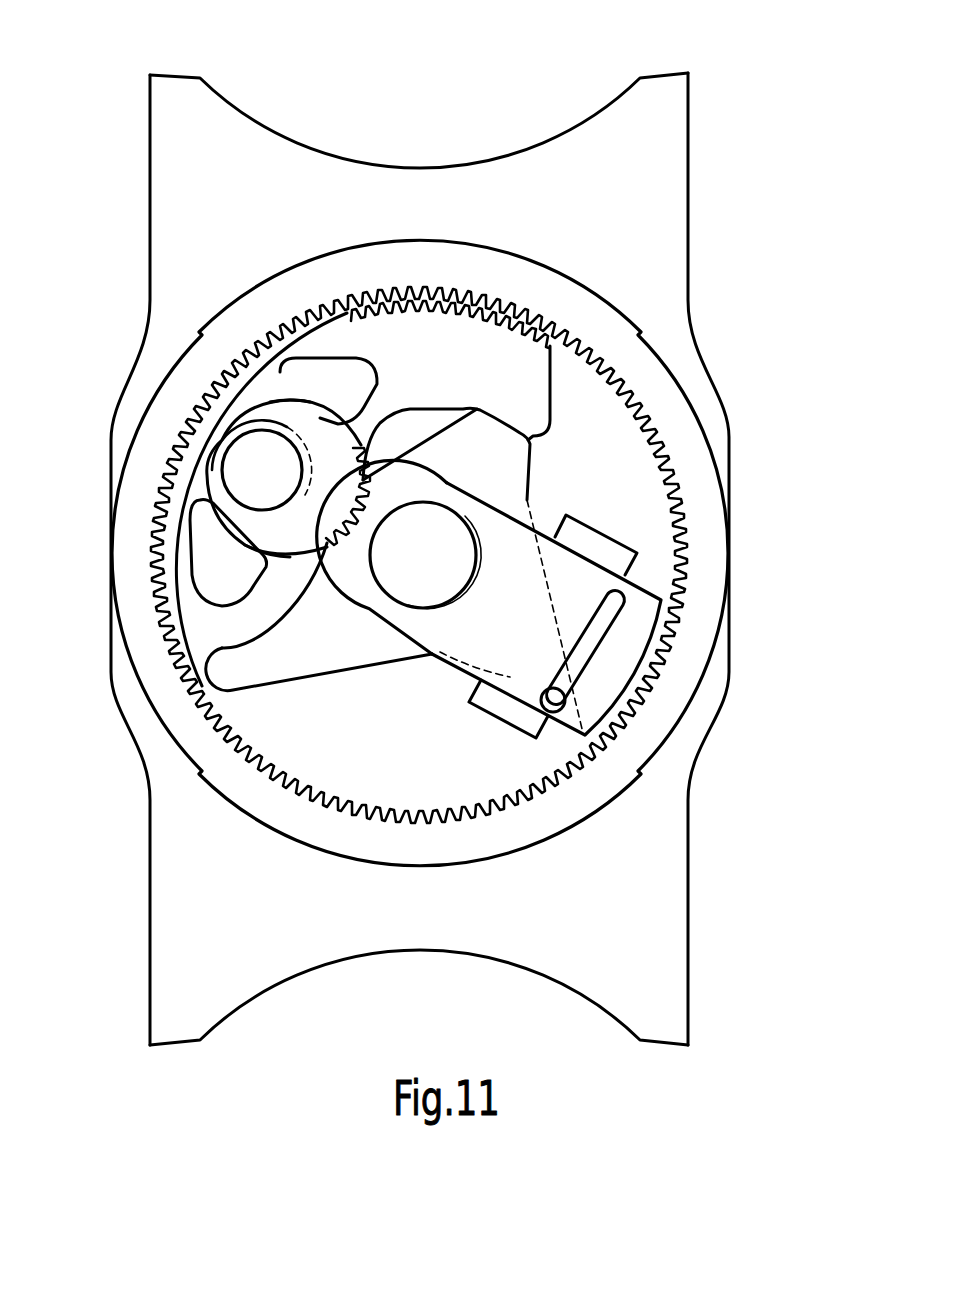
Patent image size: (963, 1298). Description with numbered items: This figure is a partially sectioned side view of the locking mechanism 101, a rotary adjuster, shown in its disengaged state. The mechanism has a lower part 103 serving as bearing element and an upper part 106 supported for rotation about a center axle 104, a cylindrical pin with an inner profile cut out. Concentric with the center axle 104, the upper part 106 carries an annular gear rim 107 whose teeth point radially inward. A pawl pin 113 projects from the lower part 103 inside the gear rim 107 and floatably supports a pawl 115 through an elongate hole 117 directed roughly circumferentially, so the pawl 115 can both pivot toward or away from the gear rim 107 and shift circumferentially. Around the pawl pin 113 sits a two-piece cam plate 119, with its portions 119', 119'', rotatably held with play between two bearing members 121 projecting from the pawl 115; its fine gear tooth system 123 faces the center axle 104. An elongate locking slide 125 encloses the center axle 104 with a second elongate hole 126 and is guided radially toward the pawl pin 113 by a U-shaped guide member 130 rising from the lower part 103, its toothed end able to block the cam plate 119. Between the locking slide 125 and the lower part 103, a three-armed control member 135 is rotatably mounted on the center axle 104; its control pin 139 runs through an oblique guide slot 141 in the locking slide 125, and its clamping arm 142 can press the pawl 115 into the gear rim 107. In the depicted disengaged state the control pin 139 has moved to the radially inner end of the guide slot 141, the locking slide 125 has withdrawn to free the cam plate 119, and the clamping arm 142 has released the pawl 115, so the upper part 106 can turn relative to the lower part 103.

The locking mechanism 101 is at (305, 140).
The lower part 103 is at (248, 965).
The center axle 104 is at (407, 590).
The upper part 106 is at (527, 195).
The gear rim 107 is at (597, 338).
The pawl pin 113 is at (248, 470).
The pawl 115 is at (460, 345).
The elongate hole 117 is at (235, 468).
The cam plate 119 is at (163, 437).
The upper shaft portion 119' is at (199, 273).
The lower shaft portion 119'' is at (160, 499).
The bearing members 121 is at (305, 385).
The gear tooth system 123 is at (215, 640).
The locking slide 125 is at (617, 667).
The second elongate hole 126 is at (447, 607).
The guide member 130 is at (607, 550).
The control member 135 is at (300, 657).
The control pin 139 is at (560, 712).
The guide slot 141 is at (577, 667).
The clamping arm 142 is at (500, 457).